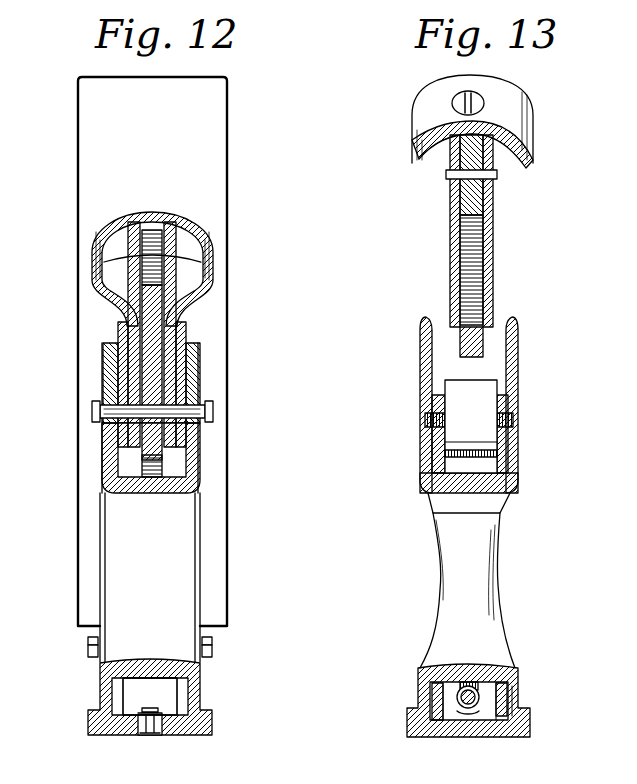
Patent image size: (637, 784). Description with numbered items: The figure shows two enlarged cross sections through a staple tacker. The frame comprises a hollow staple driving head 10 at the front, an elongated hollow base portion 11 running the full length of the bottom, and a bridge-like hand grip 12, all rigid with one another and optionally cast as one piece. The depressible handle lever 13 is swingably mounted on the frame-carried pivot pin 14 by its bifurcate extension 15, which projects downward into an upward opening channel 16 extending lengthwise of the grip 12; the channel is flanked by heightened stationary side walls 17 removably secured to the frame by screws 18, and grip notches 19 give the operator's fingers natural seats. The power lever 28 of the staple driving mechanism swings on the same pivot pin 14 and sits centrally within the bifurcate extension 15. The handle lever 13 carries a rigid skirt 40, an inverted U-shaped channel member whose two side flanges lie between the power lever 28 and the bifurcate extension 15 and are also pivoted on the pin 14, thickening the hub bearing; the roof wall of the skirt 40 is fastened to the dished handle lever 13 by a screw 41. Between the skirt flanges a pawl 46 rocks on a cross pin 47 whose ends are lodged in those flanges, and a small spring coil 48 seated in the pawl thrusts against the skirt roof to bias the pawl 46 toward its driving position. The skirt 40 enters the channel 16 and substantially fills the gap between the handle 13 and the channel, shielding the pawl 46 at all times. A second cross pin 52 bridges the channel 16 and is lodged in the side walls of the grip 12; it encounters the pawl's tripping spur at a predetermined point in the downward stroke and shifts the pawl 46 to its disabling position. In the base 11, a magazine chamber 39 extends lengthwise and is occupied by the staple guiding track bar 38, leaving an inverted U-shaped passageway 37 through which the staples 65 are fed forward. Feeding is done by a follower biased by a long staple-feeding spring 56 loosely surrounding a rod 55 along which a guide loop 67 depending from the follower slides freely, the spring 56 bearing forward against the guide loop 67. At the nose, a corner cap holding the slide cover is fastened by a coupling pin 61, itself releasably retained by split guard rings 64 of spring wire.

In FIG. 12, the staple driving head 10 is at (152, 351).
In FIG. 12, the base portion 11 is at (200, 688).
In FIG. 13, the base portion 11 is at (506, 688).
In FIG. 12, the hand grip 12 is at (104, 478).
In FIG. 13, the hand grip 12 is at (486, 482).
In FIG. 12, the handle lever 13 is at (143, 212).
In FIG. 13, the handle lever 13 is at (428, 119).
In FIG. 12, the pivot pin 14 is at (96, 409).
In FIG. 12, the bifurcate extension 15 is at (121, 325).
In FIG. 12, the channel 16 is at (178, 463).
In FIG. 13, the channel 16 is at (480, 430).
In FIG. 12, the stationary side walls 17 is at (110, 358).
In FIG. 13, the stationary side walls 17 is at (421, 358).
In FIG. 13, the screws 18 is at (428, 418).
In FIG. 13, the grip notches 19 is at (466, 498).
In FIG. 12, the power lever 28 is at (152, 452).
In FIG. 13, the power lever 28 is at (464, 351).
In FIG. 13, the passageway 37 is at (425, 688).
In FIG. 12, the track bar 38 is at (158, 724).
In FIG. 13, the track bar 38 is at (512, 720).
In FIG. 12, the magazine chamber 39 is at (112, 690).
In FIG. 13, the magazine chamber 39 is at (446, 700).
In FIG. 12, the skirt 40 is at (165, 255).
In FIG. 13, the skirt 40 is at (455, 235).
In FIG. 13, the screw 41 is at (464, 100).
In FIG. 13, the pawl 46 is at (456, 198).
In FIG. 13, the cross pin 47 is at (498, 175).
In FIG. 13, the spring coil 48 is at (448, 146).
In FIG. 13, the cross pin 52 is at (471, 450).
In FIG. 13, the rod 55 is at (466, 707).
In FIG. 13, the staple-feeding spring 56 is at (476, 712).
In FIG. 12, the coupling pin 61 is at (92, 650).
In FIG. 12, the split guard rings 64 is at (92, 639).
In FIG. 12, the staples 65 is at (172, 681).
In FIG. 13, the guide loop 67 is at (470, 680).